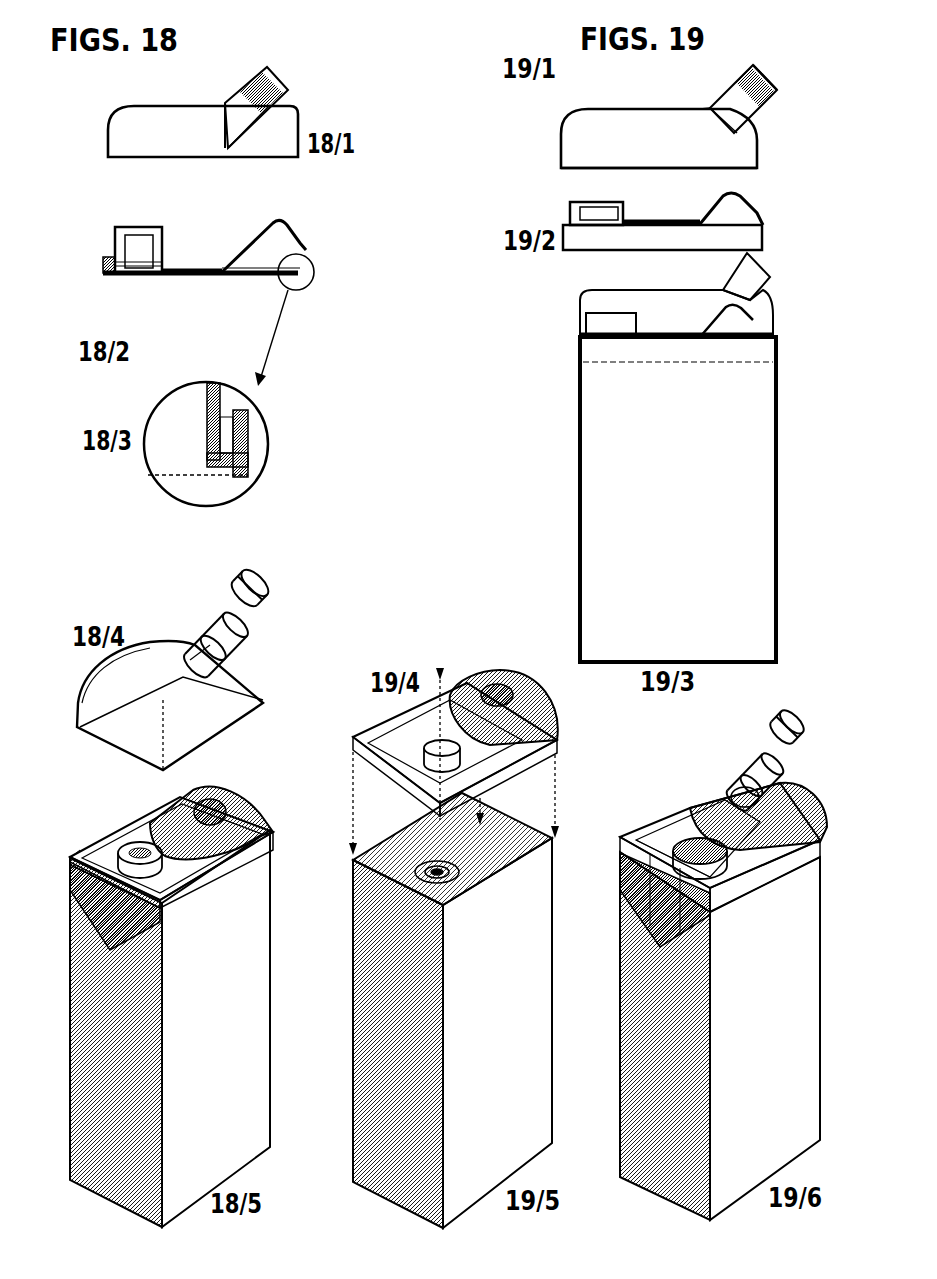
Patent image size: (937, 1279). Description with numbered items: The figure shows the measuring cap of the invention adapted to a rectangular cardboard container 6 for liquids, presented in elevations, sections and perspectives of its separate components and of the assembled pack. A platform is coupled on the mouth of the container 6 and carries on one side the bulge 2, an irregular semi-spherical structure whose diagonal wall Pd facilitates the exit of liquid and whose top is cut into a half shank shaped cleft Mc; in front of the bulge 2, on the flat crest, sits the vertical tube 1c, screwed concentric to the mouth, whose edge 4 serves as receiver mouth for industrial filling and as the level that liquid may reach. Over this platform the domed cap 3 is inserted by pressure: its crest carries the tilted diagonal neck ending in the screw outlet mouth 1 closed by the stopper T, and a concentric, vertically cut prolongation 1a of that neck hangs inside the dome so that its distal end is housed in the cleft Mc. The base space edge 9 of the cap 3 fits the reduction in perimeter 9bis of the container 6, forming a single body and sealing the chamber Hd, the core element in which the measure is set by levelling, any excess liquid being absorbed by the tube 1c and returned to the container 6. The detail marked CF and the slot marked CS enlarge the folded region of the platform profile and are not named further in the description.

In FIG. 18, the screw outlet mouth 1 is at (283, 83).
In FIG. 19, the screw outlet mouth 1 is at (752, 72).
In FIG. 18, the neck prolongation 1a is at (212, 106).
In FIG. 19, the neck prolongation 1a is at (700, 109).
In FIG. 18, the tube 1c is at (138, 245).
In FIG. 19, the tube 1c is at (575, 203).
In FIG. 18, the bulge 2 is at (303, 247).
In FIG. 19, the bulge 2 is at (750, 200).
In FIG. 19, the cap 3 is at (600, 110).
In FIG. 18, the edge of the tube 4 is at (103, 262).
In FIG. 18, the container 6 is at (232, 1012).
In FIG. 19, the container 6 is at (582, 378).
In FIG. 18, the edge of the cap 9 is at (205, 158).
In FIG. 19, the edge of the cap 9 is at (685, 168).
In FIG. 19, the perimeter reduction 9bis is at (355, 775).
In FIG. 18, the stopper T is at (238, 574).
In FIG. 19, the stopper T is at (777, 91).
In FIG. 18, the chamber Hd is at (183, 268).
In FIG. 19, the chamber Hd is at (690, 808).
In FIG. 18, the half shank cleft Mc is at (245, 800).
In FIG. 19, the half shank cleft Mc is at (490, 684).
In FIG. 19, the diagonal wall Pd is at (742, 775).
In FIG. 18, the fold CF is at (108, 290).
In FIG. 18, the slot CS is at (215, 392).